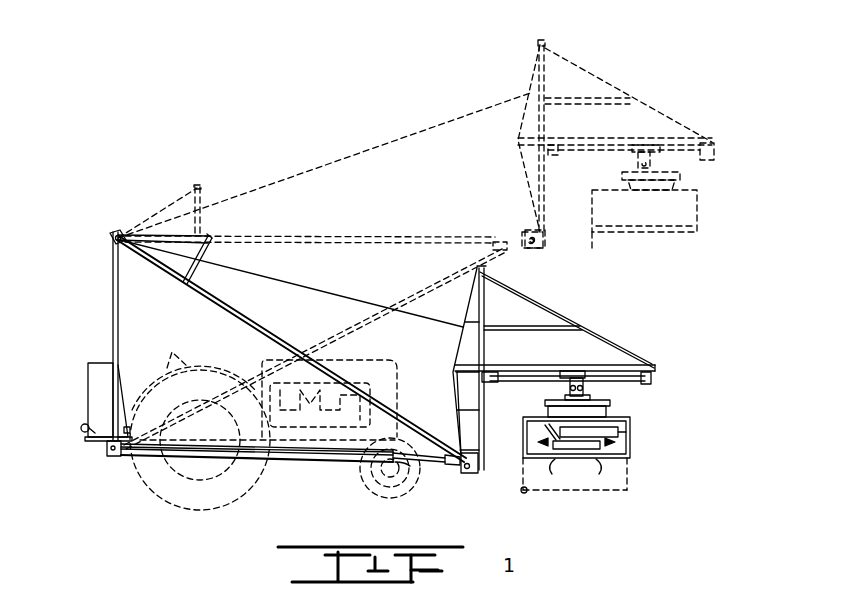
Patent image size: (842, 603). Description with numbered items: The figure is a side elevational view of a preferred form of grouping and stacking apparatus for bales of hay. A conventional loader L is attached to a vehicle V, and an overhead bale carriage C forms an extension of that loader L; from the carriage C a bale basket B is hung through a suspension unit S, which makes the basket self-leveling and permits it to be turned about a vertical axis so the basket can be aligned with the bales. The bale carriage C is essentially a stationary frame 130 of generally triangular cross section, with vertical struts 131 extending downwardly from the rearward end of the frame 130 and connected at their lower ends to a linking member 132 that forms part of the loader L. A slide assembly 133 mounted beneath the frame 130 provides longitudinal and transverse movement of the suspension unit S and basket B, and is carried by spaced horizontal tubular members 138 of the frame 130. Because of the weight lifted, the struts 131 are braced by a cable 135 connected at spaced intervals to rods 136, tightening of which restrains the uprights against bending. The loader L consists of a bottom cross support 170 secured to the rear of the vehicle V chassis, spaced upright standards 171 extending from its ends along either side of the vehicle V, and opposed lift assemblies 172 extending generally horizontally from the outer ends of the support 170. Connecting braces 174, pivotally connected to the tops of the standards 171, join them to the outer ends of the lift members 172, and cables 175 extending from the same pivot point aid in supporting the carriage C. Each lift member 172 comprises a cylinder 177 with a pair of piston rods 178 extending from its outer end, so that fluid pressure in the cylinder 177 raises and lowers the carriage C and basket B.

The stationary frame 130 is at (556, 314).
The vertical struts 131 is at (482, 440).
The linking member 132 is at (470, 470).
The slide assembly 133 is at (653, 380).
The cable 135 is at (456, 339).
The rods 136 is at (464, 372).
The horizontal tubular members 138 is at (572, 366).
The bottom cross support 170 is at (110, 448).
The upright standards 171 is at (112, 307).
The lift assemblies 172 is at (326, 463).
The connecting braces 174 is at (246, 316).
The cables 175 is at (318, 290).
The cylinder 177 is at (270, 464).
The piston rods 178 is at (422, 470).
The loader L is at (108, 344).
The vehicle V is at (140, 470).
The bale carriage C is at (590, 354).
The suspension unit S is at (614, 404).
The bale basket B is at (634, 443).